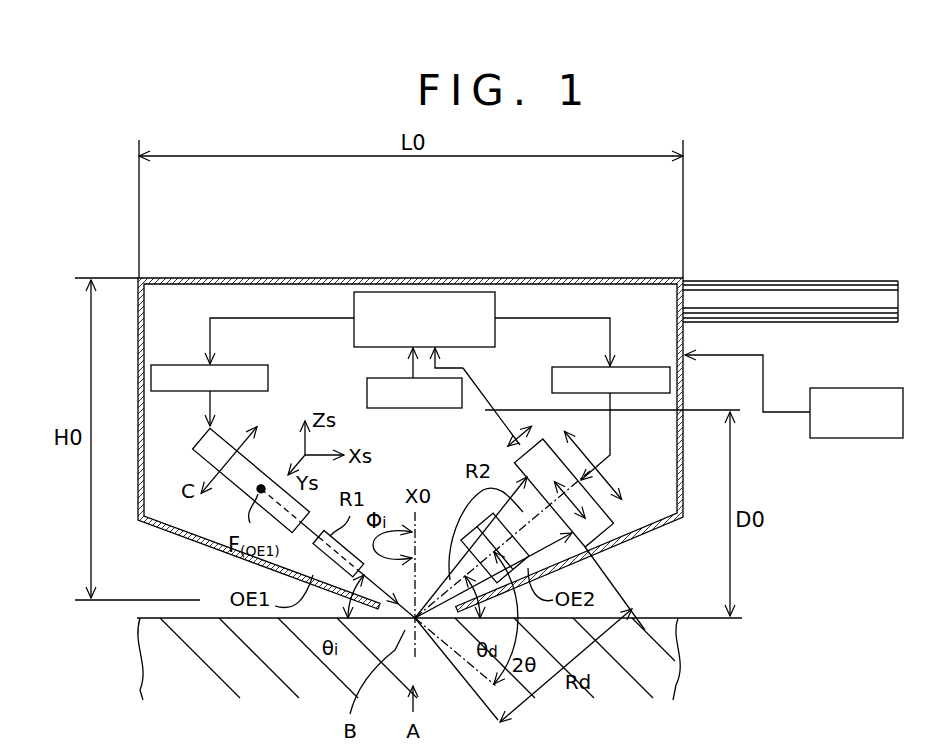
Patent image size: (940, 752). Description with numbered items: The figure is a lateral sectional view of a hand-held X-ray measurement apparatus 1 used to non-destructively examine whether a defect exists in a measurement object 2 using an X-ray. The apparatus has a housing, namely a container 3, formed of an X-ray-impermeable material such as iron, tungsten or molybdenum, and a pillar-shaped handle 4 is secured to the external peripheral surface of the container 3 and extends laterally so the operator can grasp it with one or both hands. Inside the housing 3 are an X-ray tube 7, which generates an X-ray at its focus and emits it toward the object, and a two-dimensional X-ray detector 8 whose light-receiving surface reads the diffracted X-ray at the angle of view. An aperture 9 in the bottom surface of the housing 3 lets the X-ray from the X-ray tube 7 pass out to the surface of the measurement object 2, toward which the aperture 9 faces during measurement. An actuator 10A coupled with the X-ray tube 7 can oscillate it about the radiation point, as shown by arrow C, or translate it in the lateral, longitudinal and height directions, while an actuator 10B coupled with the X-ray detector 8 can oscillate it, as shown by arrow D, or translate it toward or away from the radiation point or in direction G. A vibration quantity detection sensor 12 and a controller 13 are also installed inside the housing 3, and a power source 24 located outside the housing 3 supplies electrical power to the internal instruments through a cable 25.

The X-ray measurement apparatus 1 is at (812, 203).
The measurement object 2 is at (660, 678).
The housing (container) 3 is at (207, 278).
The handle 4 is at (740, 283).
The X-ray tube 7 is at (205, 440).
The two-dimensional X-ray detector 8 is at (608, 536).
The aperture 9 is at (385, 625).
The actuator 10A is at (185, 365).
The actuator 10B is at (640, 367).
The vibration quantity detection sensor 12 is at (385, 378).
The controller 13 is at (425, 292).
The power source 24 is at (854, 439).
The cable 25 is at (764, 370).